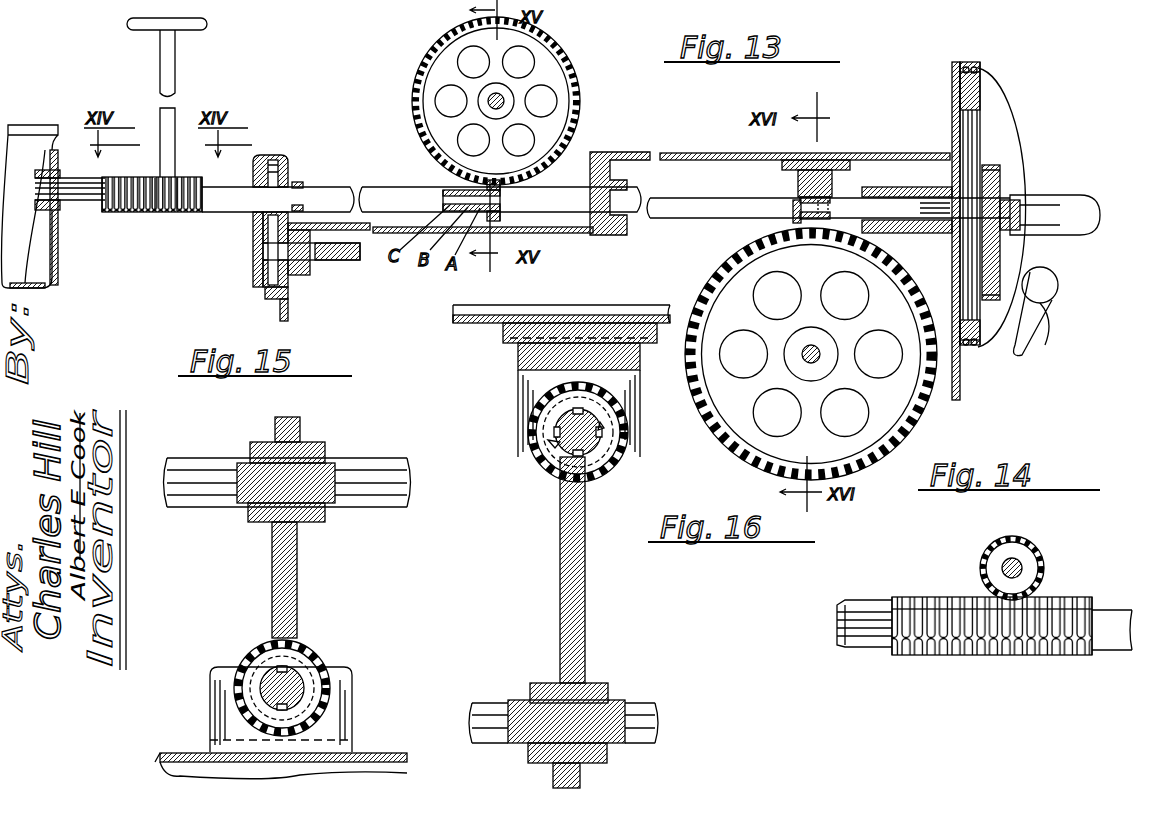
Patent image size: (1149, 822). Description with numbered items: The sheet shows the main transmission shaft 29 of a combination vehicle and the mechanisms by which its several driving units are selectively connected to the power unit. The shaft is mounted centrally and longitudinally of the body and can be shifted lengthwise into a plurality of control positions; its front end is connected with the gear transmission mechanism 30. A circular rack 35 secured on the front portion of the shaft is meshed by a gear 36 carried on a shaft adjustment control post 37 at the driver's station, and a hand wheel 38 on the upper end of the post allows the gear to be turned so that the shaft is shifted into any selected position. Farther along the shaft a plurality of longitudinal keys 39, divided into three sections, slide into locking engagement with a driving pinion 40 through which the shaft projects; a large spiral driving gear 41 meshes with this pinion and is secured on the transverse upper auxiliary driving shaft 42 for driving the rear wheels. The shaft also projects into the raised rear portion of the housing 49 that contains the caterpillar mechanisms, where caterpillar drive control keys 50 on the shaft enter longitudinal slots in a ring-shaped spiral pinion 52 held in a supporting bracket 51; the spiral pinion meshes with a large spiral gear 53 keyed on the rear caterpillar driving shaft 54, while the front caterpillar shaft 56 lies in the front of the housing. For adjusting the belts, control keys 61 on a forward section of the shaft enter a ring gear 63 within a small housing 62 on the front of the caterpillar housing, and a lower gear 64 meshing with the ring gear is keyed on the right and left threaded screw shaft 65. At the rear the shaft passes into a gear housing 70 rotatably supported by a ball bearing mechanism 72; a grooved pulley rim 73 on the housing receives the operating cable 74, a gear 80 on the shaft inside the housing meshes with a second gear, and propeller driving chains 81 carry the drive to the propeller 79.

In FIG. 13, the main transmission shaft 29 is at (403, 188).
In FIG. 15, the main transmission shaft 29 is at (295, 680).
In FIG. 16, the main transmission shaft 29 is at (565, 455).
In FIG. 14, the main transmission shaft 29 is at (1110, 632).
In FIG. 13, the gear transmission mechanism 30 is at (58, 266).
In FIG. 13, the circular rack 35 is at (185, 212).
In FIG. 14, the circular rack 35 is at (1000, 628).
In FIG. 13, the gear 36 is at (160, 212).
In FIG. 14, the gear 36 is at (1040, 575).
In FIG. 13, the shaft adjustment control post 37 is at (175, 78).
In FIG. 14, the shaft adjustment control post 37 is at (1002, 568).
In FIG. 13, the hand wheel 38 is at (207, 24).
In FIG. 13, the keys 39 is at (500, 195).
In FIG. 15, the keys 39 is at (240, 660).
In FIG. 15, the driving pinion 40 is at (310, 660).
In FIG. 13, the spiral driving gear 41 is at (560, 122).
In FIG. 15, the spiral driving gear 41 is at (285, 580).
In FIG. 13, the upper auxiliary driving shaft 42 is at (490, 102).
In FIG. 15, the upper auxiliary driving shaft 42 is at (360, 460).
In FIG. 13, the housing 49 is at (708, 152).
In FIG. 15, the housing 49 is at (380, 753).
In FIG. 16, the housing 49 is at (495, 313).
In FIG. 16, the caterpillar drive control keys 50 is at (548, 446).
In FIG. 13, the supporting bracket 51 is at (832, 165).
In FIG. 16, the supporting bracket 51 is at (540, 357).
In FIG. 13, the spiral pinion 52 is at (808, 172).
In FIG. 16, the spiral pinion 52 is at (535, 423).
In FIG. 13, the large spiral gear 53 is at (700, 278).
In FIG. 16, the large spiral gear 53 is at (572, 620).
In FIG. 13, the rear caterpillar driving shaft 54 is at (818, 360).
In FIG. 16, the rear caterpillar driving shaft 54 is at (635, 720).
In FIG. 13, the front caterpillar shaft 56 is at (793, 210).
In FIG. 13, the control keys 61 is at (302, 188).
In FIG. 13, the small housing 62 is at (275, 155).
In FIG. 13, the ring gear 63 is at (268, 170).
In FIG. 13, the lower gear 64 is at (253, 270).
In FIG. 13, the screw shaft 65 is at (345, 260).
In FIG. 13, the gear housing 70 is at (985, 140).
In FIG. 13, the ball bearing mechanism 72 is at (975, 88).
In FIG. 13, the grooved pulley rim 73 is at (975, 345).
In FIG. 13, the operating cable 74 is at (958, 348).
In FIG. 13, the propeller 79 is at (1040, 340).
In FIG. 13, the gear 80 is at (1000, 190).
In FIG. 13, the propeller driving chains 81 is at (1015, 200).